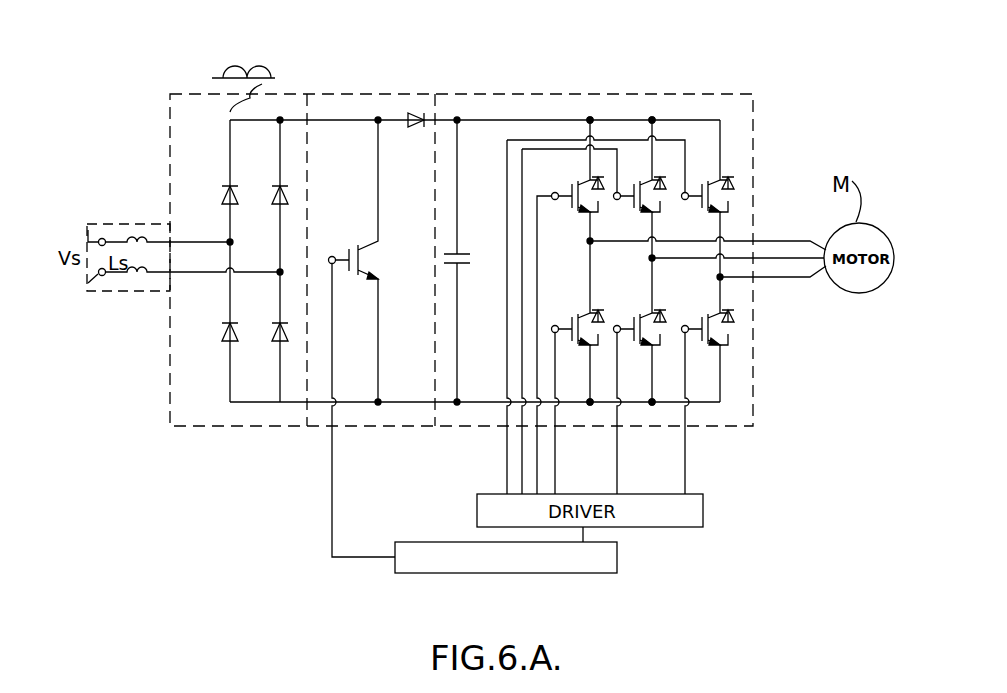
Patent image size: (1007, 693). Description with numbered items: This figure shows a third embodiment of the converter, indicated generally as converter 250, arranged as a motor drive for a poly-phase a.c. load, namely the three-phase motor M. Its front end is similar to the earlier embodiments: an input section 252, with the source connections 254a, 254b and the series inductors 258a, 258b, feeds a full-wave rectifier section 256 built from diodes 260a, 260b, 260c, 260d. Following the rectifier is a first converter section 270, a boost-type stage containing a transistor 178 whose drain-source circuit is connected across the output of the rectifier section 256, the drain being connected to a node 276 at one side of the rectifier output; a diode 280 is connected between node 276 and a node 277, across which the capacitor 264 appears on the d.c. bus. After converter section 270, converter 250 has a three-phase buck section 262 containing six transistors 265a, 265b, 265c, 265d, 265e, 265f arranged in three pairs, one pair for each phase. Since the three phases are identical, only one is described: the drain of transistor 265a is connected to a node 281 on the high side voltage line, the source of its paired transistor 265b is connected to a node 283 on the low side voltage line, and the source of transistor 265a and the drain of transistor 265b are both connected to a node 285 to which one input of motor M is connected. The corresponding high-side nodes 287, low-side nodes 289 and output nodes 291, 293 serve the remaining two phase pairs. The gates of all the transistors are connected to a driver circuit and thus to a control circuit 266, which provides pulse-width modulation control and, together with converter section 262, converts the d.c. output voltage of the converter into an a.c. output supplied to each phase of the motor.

The converter 250 is at (296, 468).
The input section 252 is at (92, 224).
The input terminal 254a is at (88, 229).
The input terminal 254b is at (88, 283).
The full-wave rectifier section 256 is at (262, 433).
The line inductor 258a is at (152, 240).
The line inductor 258b is at (151, 281).
The rectifier diode 260a is at (234, 192).
The rectifier diode 260b is at (229, 338).
The rectifier diode 260c is at (285, 192).
The rectifier diode 260d is at (279, 336).
The three-phase buck section 262 is at (470, 95).
The filter capacitor 264 is at (461, 255).
The transistor 265a is at (566, 188).
The transistor 265b is at (572, 367).
The transistor 265c is at (626, 188).
The transistor 265d is at (633, 376).
The transistor 265e is at (694, 186).
The transistor 265f is at (698, 385).
The control circuit 266 is at (472, 575).
The first converter section 270 is at (360, 96).
The node 276 is at (376, 120).
The node 277 is at (457, 118).
The blocking diode 280 is at (410, 125).
The node 281 is at (590, 118).
The node 283 is at (591, 405).
The node 285 is at (587, 241).
The upper node 287 is at (652, 118).
The lower node 289 is at (653, 405).
The phase output node 291 is at (650, 252).
The phase output node 293 is at (721, 275).
The transistor 178 is at (359, 250).